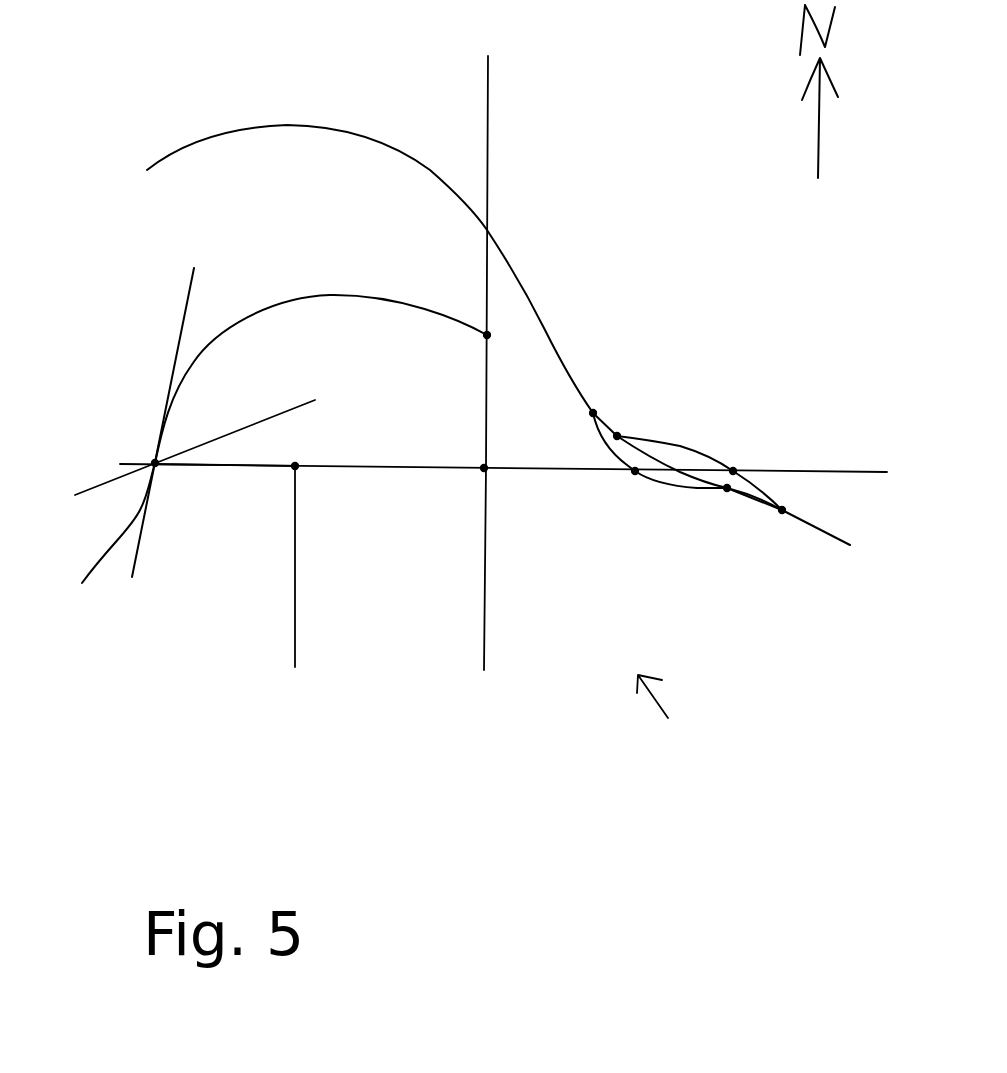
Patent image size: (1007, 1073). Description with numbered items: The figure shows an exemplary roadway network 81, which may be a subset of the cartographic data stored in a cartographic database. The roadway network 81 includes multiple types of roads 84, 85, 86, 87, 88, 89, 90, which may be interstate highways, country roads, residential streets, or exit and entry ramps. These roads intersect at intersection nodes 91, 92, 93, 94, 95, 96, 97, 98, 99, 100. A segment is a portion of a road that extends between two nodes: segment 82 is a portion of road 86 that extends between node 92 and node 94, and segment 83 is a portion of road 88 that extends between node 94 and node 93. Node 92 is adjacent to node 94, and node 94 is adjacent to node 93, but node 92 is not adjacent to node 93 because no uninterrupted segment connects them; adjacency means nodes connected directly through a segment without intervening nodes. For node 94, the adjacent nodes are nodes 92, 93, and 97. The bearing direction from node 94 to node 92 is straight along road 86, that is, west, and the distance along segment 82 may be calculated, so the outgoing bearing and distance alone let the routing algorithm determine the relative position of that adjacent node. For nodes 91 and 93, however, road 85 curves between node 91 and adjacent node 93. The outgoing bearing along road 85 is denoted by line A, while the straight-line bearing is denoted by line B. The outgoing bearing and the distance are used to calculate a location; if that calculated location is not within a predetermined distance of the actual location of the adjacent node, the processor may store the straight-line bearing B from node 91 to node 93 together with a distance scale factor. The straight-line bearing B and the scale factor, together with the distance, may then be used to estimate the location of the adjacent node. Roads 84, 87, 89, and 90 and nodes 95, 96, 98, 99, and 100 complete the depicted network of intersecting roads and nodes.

The roadway network 81 is at (663, 715).
The segment 82 is at (367, 468).
The segment 83 is at (488, 410).
The road 84 is at (293, 124).
The road 85 is at (193, 363).
The road 86 is at (203, 466).
The road 87 is at (296, 595).
The road 88 is at (485, 595).
The road 89 is at (685, 446).
The road 90 is at (768, 499).
The intersection node 91 is at (150, 460).
The intersection node 92 is at (297, 465).
The intersection node 93 is at (488, 337).
The intersection node 94 is at (486, 470).
The intersection node 95 is at (595, 411).
The intersection node 96 is at (619, 435).
The intersection node 97 is at (635, 474).
The intersection node 98 is at (727, 491).
The intersection node 99 is at (736, 470).
The intersection node 100 is at (783, 513).
The line A is at (185, 312).
The line B is at (263, 420).